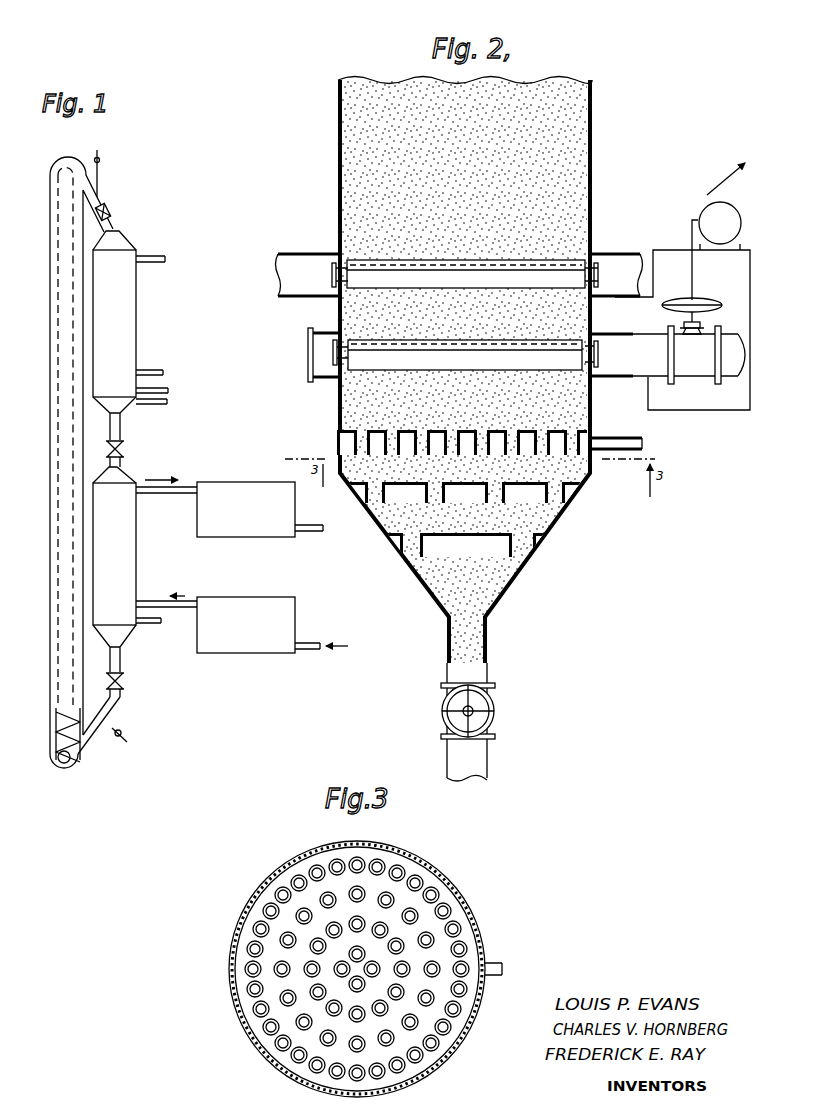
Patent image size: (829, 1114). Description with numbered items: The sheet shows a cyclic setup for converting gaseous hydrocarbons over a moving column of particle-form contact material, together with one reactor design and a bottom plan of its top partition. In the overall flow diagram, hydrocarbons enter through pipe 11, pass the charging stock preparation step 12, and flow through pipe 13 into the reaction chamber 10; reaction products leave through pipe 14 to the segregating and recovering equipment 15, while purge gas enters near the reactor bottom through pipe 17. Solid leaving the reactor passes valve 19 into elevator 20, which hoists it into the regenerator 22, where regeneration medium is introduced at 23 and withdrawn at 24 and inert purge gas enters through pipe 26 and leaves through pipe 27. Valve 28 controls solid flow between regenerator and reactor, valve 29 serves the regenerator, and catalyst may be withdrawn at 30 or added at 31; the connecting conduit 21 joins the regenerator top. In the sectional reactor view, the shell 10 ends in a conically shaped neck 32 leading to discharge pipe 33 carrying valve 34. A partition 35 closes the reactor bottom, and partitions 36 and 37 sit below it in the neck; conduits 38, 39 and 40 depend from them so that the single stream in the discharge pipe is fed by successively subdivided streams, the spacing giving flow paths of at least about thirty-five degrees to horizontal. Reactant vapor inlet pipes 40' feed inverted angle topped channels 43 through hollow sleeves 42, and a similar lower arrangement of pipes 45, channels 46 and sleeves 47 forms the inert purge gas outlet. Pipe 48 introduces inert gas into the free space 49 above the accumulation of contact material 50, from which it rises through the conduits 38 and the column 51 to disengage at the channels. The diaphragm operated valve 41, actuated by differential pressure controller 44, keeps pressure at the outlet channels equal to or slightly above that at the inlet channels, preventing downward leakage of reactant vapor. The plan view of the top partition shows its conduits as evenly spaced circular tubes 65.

In FIG. 1, the reaction chamber 10 is at (138, 558).
In FIG. 2, the reaction chamber 10 is at (338, 165).
In FIG. 3, the reaction chamber 10 is at (230, 952).
In FIG. 1, the pipe 11 is at (310, 650).
In FIG. 1, the charging stock preparation step 12 is at (252, 597).
In FIG. 1, the pipe 13 is at (163, 601).
In FIG. 1, the pipe 14 is at (168, 494).
In FIG. 1, the product segregating and recovering equipment 15 is at (248, 482).
In FIG. 1, the pipe 17 is at (157, 626).
In FIG. 1, the valve 19 is at (125, 684).
In FIG. 1, the elevator 20 is at (60, 772).
In FIG. 1, the conduit to regenerator 21 is at (118, 233).
In FIG. 1, the regenerator 22 is at (130, 325).
In FIG. 1, the regeneration medium inlet 23 is at (160, 372).
In FIG. 1, the regeneration medium outlet 24 is at (165, 257).
In FIG. 1, the pipe 26 is at (165, 406).
In FIG. 1, the pipe 27 is at (168, 390).
In FIG. 1, the valve 28 is at (125, 449).
In FIG. 1, the valve 29 is at (112, 212).
In FIG. 1, the catalyst withdrawal point 30 is at (117, 742).
In FIG. 1, the catalyst addition point 31 is at (100, 160).
In FIG. 2, the conically shaped neck 32 is at (506, 593).
In FIG. 2, the discharge pipe 33 is at (489, 640).
In FIG. 2, the valve 34 is at (497, 708).
In FIG. 2, the partition 35 is at (555, 430).
In FIG. 3, the partition 35 is at (252, 1025).
In FIG. 2, the partition 36 is at (530, 486).
In FIG. 2, the partition 37 is at (527, 567).
In FIG. 2, the conduits 38 is at (370, 455).
In FIG. 2, the conduits 39 is at (371, 508).
In FIG. 2, the conduits 40 is at (588, 545).
In FIG. 2, the reactant vapor inlet pipes 40' is at (464, 256).
In FIG. 2, the diaphragm operated valve 41 is at (684, 370).
In FIG. 2, the hollow sleeves 42 is at (334, 266).
In FIG. 2, the inverted angle topped channels 43 is at (367, 259).
In FIG. 2, the differential pressure controller 44 is at (707, 205).
In FIG. 2, the pipes 45 is at (645, 333).
In FIG. 2, the channels 46 is at (366, 340).
In FIG. 2, the sleeves 47 is at (598, 365).
In FIG. 2, the pipe 48 is at (645, 444).
In FIG. 2, the free space 49 is at (562, 478).
In FIG. 2, the accumulation of contact material 50 is at (568, 463).
In FIG. 2, the column 51 is at (368, 396).
In FIG. 3, the tubes 65 is at (446, 910).